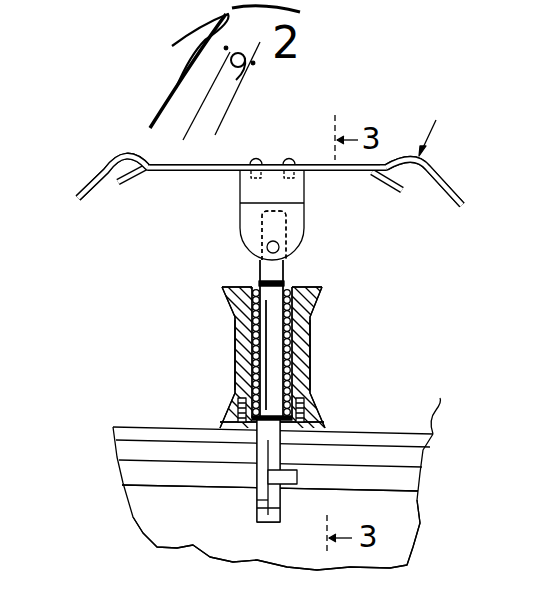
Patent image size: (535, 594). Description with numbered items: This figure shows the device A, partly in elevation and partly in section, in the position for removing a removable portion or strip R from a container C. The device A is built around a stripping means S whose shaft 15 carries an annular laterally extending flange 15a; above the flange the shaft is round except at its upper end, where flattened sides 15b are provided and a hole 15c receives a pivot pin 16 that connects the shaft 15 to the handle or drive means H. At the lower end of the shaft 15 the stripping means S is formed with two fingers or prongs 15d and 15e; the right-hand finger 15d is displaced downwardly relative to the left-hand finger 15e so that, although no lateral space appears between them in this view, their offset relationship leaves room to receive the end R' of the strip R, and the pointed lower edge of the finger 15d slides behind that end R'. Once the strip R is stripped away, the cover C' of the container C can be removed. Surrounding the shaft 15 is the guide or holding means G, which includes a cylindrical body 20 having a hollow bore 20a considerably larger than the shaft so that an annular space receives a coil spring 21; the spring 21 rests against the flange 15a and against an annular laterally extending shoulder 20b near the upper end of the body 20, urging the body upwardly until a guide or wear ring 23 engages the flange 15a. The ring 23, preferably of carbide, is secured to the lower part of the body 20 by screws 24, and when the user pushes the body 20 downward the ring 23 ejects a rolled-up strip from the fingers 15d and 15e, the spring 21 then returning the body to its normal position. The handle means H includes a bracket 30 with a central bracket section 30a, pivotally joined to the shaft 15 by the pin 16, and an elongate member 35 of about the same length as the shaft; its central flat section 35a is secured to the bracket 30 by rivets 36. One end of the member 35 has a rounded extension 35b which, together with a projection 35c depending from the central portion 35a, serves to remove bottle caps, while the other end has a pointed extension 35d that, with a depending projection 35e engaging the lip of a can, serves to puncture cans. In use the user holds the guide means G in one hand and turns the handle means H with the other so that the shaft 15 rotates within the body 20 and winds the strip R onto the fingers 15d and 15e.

The shaft 15 is at (283, 292).
The annular laterally extending flange 15a is at (240, 402).
The flattened sides 15b is at (262, 273).
The hole 15c is at (289, 270).
The right-hand finger or prong 15d is at (282, 500).
The left-hand finger or prong 15e is at (258, 506).
The pivot pin 16 is at (266, 247).
The cylindrical body 20 is at (238, 337).
The hollow bore 20a is at (235, 322).
The annular laterally extending shoulder 20b is at (252, 289).
The coil spring 21 is at (252, 350).
The guide or wear ring 23 is at (322, 427).
The screws 24 is at (238, 414).
The bracket 30 is at (243, 206).
The central bracket section 30a is at (274, 162).
The elongate member 35 is at (320, 174).
The central flat section 35a is at (178, 172).
The extension 35b is at (456, 190).
The projection 35c is at (400, 193).
The extension 35d is at (86, 182).
The projection 35e is at (123, 187).
The rivets 36 is at (252, 160).
The device A is at (432, 128).
The guide or holding means G is at (300, 330).
The handle or drive means H is at (212, 163).
The stripping means S is at (272, 352).
The removable portion or strip R is at (300, 498).
The end of the removable strip R' is at (305, 478).
The container C is at (305, 527).
The cover C' is at (441, 408).